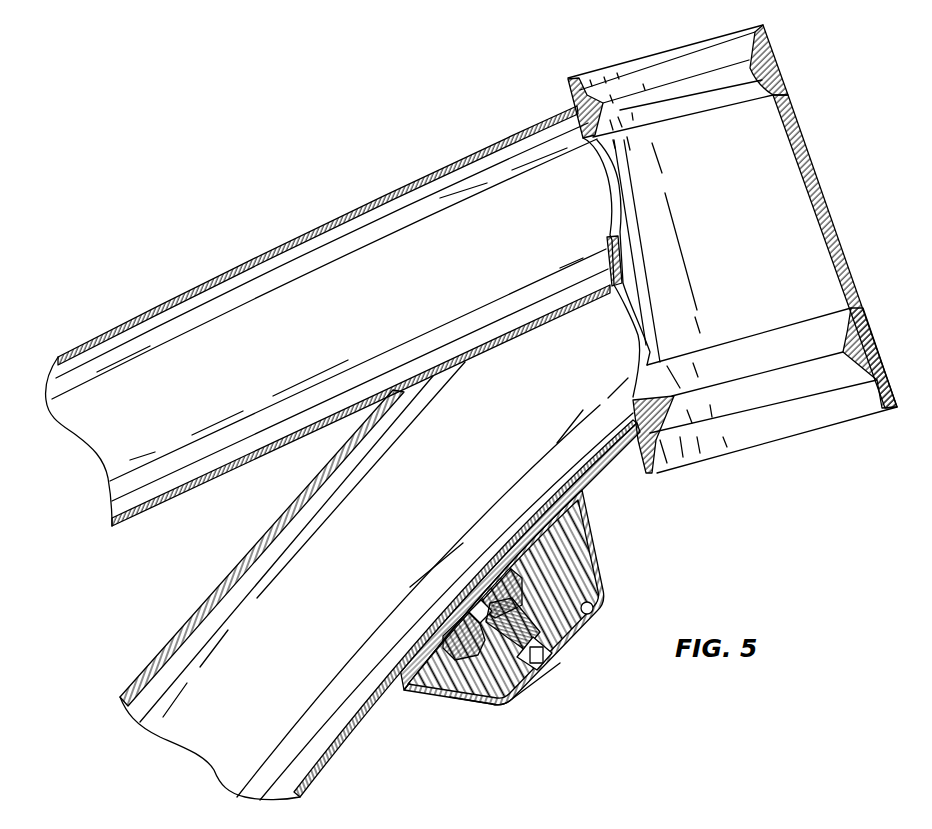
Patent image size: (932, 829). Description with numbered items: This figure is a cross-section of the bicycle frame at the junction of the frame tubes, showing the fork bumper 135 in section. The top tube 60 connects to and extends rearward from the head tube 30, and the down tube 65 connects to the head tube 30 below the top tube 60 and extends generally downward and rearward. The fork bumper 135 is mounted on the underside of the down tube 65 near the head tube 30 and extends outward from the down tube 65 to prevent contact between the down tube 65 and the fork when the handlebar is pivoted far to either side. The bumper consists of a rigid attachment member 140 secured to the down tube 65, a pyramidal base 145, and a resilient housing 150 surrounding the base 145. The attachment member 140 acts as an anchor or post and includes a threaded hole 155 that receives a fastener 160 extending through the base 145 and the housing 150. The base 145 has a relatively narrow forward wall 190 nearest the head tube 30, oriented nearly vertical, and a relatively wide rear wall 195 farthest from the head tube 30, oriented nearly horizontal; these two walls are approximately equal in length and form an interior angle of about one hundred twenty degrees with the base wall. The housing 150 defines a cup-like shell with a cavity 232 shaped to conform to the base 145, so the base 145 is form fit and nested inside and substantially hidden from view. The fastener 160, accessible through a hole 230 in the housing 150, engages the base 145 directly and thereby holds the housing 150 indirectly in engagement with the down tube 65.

The head tube 30 is at (815, 175).
The top tube 60 is at (271, 254).
The down tube 65 is at (348, 737).
The fork bumper 135 is at (632, 728).
The attachment member 140 is at (450, 647).
The base 145 is at (502, 688).
The housing 150 is at (598, 566).
The threaded hole 155 is at (410, 565).
The fastener 160 is at (548, 662).
The forward wall 190 is at (596, 528).
The rear wall 195 is at (473, 697).
The hole 230 is at (542, 681).
The cavity 232 is at (600, 600).